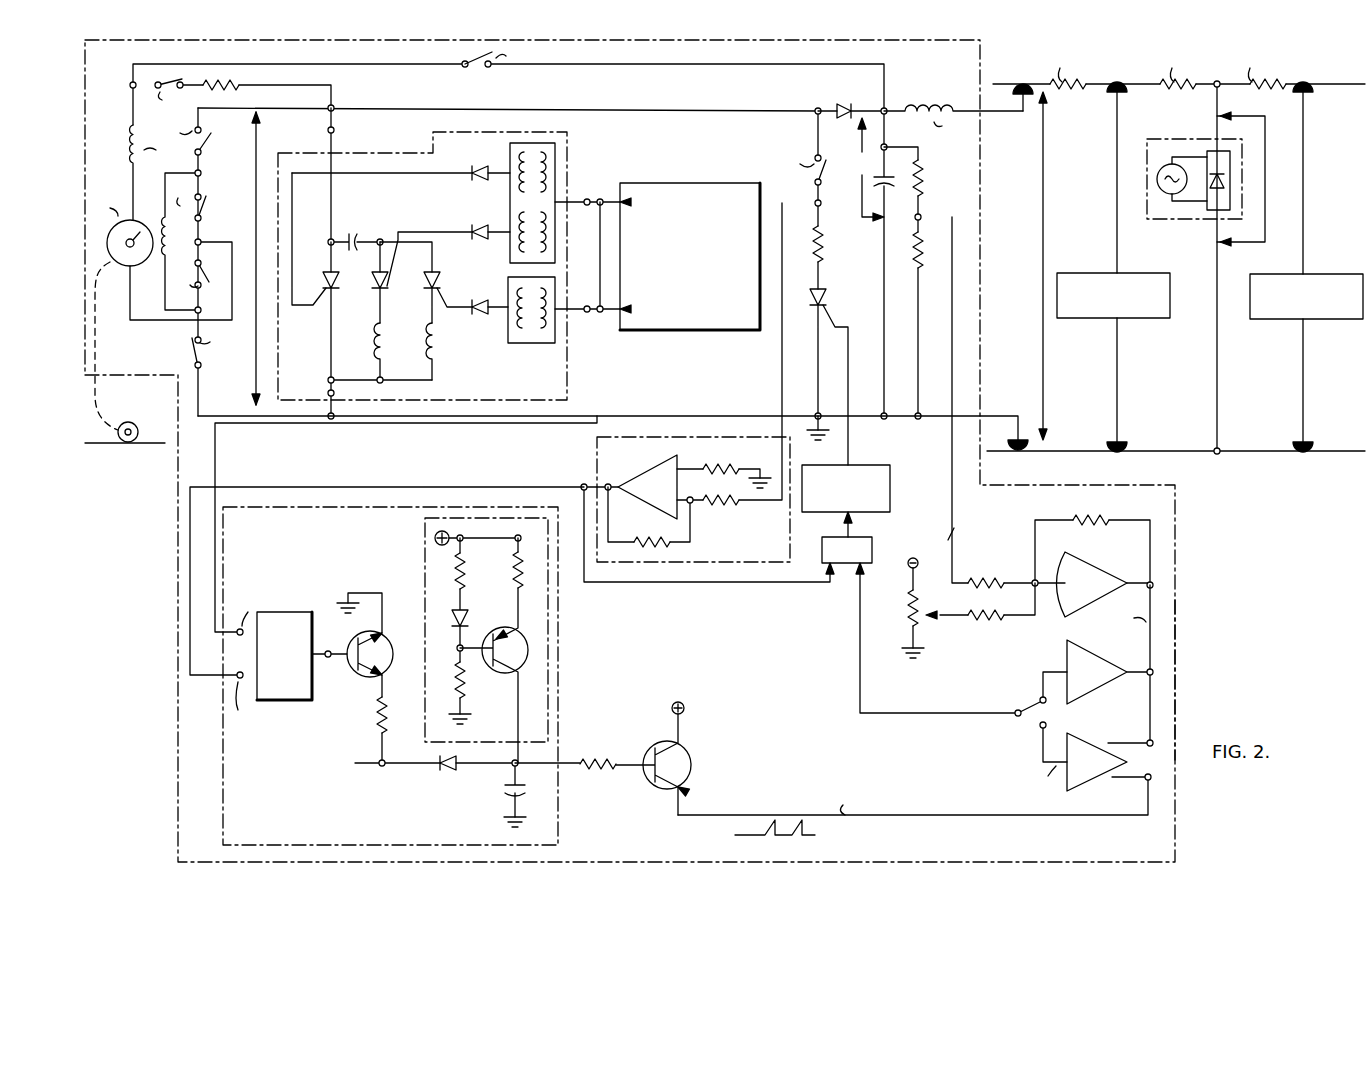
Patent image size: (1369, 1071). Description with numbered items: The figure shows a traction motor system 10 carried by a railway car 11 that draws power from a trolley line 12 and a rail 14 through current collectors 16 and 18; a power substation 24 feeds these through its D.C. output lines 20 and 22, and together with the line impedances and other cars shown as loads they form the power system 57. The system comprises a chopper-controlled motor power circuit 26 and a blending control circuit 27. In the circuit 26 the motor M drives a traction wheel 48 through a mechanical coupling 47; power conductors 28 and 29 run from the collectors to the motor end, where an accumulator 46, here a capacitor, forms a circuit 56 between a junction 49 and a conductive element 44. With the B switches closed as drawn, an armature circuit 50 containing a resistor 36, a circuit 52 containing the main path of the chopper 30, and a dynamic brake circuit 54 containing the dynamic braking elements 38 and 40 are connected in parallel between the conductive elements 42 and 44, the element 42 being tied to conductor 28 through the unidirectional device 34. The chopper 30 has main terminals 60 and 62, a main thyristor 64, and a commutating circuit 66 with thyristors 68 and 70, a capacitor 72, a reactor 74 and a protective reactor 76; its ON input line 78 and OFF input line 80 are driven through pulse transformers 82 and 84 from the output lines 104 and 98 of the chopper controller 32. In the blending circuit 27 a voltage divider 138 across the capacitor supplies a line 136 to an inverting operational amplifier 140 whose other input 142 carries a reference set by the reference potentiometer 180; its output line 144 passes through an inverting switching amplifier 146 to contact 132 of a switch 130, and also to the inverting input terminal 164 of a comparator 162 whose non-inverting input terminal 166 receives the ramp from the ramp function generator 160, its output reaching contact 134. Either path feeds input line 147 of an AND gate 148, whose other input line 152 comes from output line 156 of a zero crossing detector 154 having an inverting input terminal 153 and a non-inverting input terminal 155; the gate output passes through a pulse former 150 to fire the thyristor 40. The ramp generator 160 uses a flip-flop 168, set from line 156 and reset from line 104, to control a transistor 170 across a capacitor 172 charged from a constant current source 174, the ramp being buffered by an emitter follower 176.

The traction motor system 10 is at (674, 383).
The railway car 11 is at (1184, 674).
The trolley line 12 is at (1122, 82).
The rail 14 is at (146, 448).
The current collector 16 is at (1012, 100).
The current collector 18 is at (1008, 442).
The D.C. output line 20 is at (1215, 96).
The D.C. output line 22 is at (1218, 366).
The power substation 24 is at (1155, 220).
The chopper-controlled motor power circuit 26 is at (630, 451).
The blending control circuit 27 is at (733, 643).
The power conductor 28 is at (905, 108).
The power conductor 29 is at (988, 416).
The chopper 30 is at (548, 132).
The chopper controller 32 is at (710, 184).
The unidirectional device 34 is at (842, 104).
The resistor 36 is at (232, 78).
The dynamic braking element 38 is at (824, 246).
The dynamic braking element 40 is at (824, 302).
The conductive element 42 is at (628, 109).
The conductive element 44 is at (646, 416).
The accumulator 46 is at (900, 196).
The mechanical coupling 47 is at (95, 340).
The traction wheel 48 is at (133, 422).
The junction 49 is at (886, 110).
The armature circuit 50 is at (132, 114).
The circuit 52 is at (336, 112).
The dynamic brake circuit 54 is at (828, 136).
The circuit 56 is at (885, 128).
The power system 57 is at (1020, 266).
The main terminal 60 is at (326, 392).
The main terminal 62 is at (326, 130).
The thyristor 64 is at (350, 290).
The commutating circuit 66 is at (401, 235).
The thyristor 68 is at (444, 290).
The thyristor 70 is at (392, 280).
The capacitor 72 is at (354, 236).
The reactor 74 is at (390, 354).
The protective reactor 76 is at (442, 354).
The ON input line 78 is at (580, 194).
The OFF input line 80 is at (580, 318).
The pulse transformer 82 is at (508, 250).
The pulse transformer 84 is at (506, 346).
The output line 98 is at (604, 314).
The output line 104 is at (604, 194).
The switch 130 is at (1016, 710).
The contact 132 is at (1040, 696).
The contact 134 is at (1040, 730).
The line 136 is at (950, 553).
The voltage divider 138 is at (924, 178).
The inverting operational amplifier 140 is at (1092, 566).
The input 142 is at (962, 618).
The output line 144 is at (1138, 630).
The inverting switching amplifier 146 is at (1110, 672).
The input line 147 is at (856, 602).
The AND gate 148 is at (866, 546).
The pulse former 150 is at (888, 484).
The input line 152 is at (790, 588).
The inverting input terminal 153 is at (690, 466).
The zero crossing detector 154 is at (592, 442).
The non-inverting input terminal 155 is at (672, 528).
The output line 156 is at (582, 484).
The ramp function generator 160 is at (559, 616).
The comparator 162 is at (1071, 765).
The inverting input terminal 164 is at (1142, 740).
The non-inverting input terminal 166 is at (1140, 786).
The flip-flop 168 is at (328, 652).
The transistor 170 is at (364, 680).
The capacitor 172 is at (492, 792).
The constant current source 174 is at (428, 538).
The emitter follower 176 is at (662, 788).
The reference potentiometer 180 is at (890, 596).